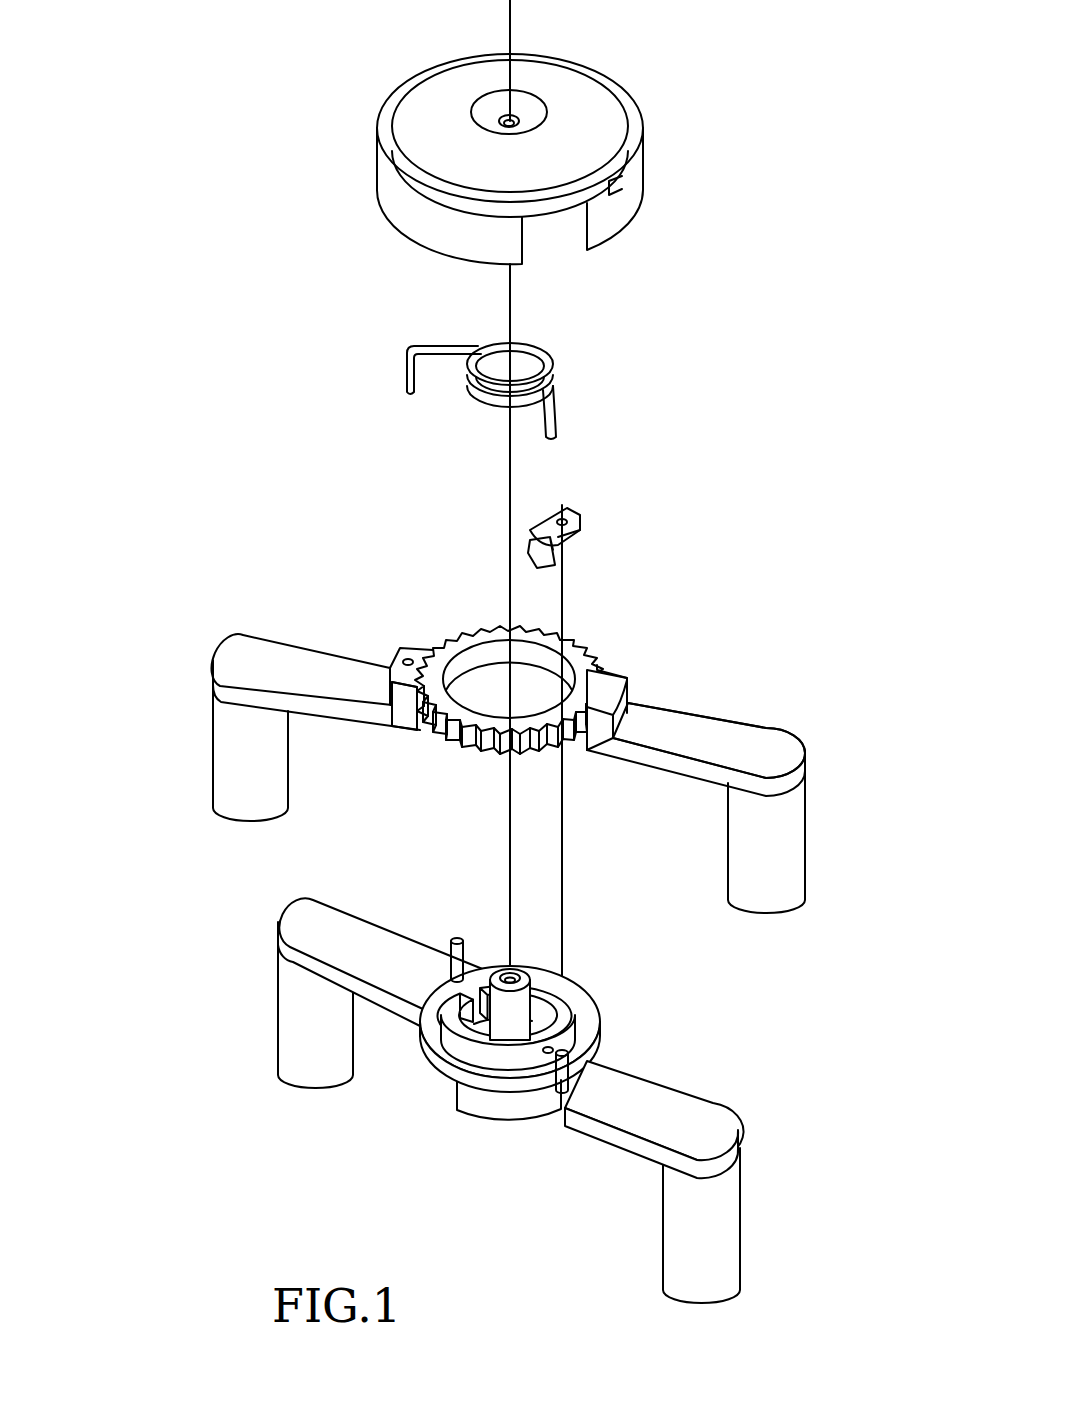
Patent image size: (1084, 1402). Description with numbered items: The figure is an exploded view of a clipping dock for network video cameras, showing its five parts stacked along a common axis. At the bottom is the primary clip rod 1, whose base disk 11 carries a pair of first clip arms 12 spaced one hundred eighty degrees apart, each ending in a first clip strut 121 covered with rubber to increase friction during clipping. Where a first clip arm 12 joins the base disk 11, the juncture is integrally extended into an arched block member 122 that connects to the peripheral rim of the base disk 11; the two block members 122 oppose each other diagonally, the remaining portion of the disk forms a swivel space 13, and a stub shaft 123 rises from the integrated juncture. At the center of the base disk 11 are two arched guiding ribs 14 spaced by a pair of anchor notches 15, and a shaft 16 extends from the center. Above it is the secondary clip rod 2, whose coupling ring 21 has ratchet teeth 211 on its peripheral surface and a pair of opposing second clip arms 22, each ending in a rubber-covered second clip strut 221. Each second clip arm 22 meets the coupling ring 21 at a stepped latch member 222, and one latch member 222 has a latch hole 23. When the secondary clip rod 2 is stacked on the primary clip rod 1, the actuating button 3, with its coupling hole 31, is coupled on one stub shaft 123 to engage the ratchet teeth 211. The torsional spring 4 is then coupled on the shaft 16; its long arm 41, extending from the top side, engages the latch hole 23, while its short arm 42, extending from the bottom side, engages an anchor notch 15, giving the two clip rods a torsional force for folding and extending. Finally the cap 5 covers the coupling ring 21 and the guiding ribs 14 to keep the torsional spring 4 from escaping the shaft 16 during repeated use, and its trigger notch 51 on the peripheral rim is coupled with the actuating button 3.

The primary clip rod 1 is at (521, 1079).
The base disk 11 is at (585, 1013).
The first clip arm 12 is at (732, 1178).
The first clip strut 121 is at (710, 1246).
The arched block member 122 is at (515, 1110).
The stub shaft 123 is at (452, 952).
The swivel space 13 is at (432, 1083).
The arched guiding rib 14 is at (495, 1052).
The anchor notch 15 is at (558, 1050).
The shaft 16 is at (513, 1010).
The secondary clip rod 2 is at (531, 702).
The coupling ring 21 is at (473, 661).
The ratchet teeth 211 is at (478, 740).
The second clip arm 22 is at (751, 733).
The second clip strut 221 is at (776, 840).
The stepped latch member 222 is at (618, 720).
The latch hole 23 is at (405, 660).
The actuating button 3 is at (561, 516).
The coupling hole 31 is at (556, 521).
The torsional spring 4 is at (464, 392).
The long arm 41 is at (405, 372).
The short arm 42 is at (553, 428).
The cap 5 is at (442, 178).
The trigger notch 51 is at (555, 233).